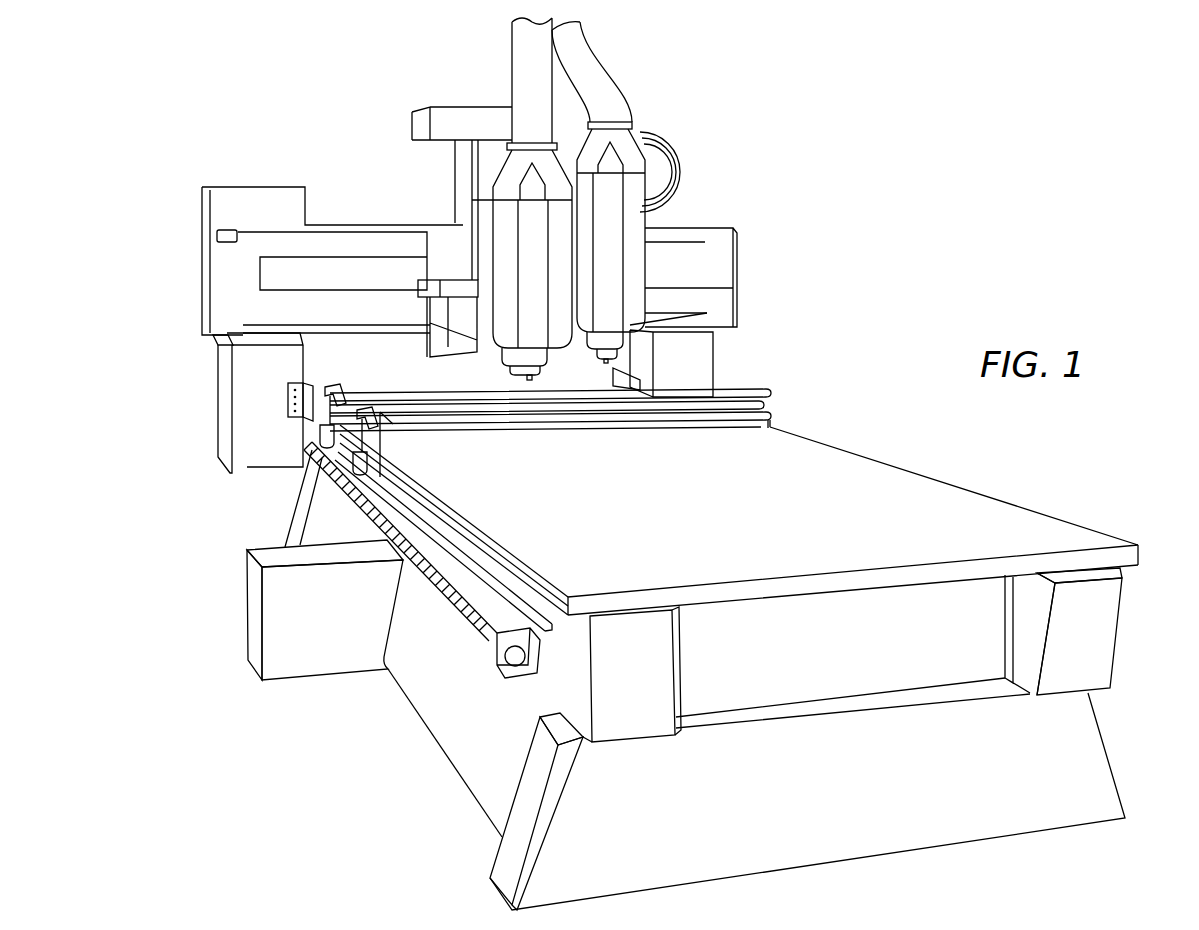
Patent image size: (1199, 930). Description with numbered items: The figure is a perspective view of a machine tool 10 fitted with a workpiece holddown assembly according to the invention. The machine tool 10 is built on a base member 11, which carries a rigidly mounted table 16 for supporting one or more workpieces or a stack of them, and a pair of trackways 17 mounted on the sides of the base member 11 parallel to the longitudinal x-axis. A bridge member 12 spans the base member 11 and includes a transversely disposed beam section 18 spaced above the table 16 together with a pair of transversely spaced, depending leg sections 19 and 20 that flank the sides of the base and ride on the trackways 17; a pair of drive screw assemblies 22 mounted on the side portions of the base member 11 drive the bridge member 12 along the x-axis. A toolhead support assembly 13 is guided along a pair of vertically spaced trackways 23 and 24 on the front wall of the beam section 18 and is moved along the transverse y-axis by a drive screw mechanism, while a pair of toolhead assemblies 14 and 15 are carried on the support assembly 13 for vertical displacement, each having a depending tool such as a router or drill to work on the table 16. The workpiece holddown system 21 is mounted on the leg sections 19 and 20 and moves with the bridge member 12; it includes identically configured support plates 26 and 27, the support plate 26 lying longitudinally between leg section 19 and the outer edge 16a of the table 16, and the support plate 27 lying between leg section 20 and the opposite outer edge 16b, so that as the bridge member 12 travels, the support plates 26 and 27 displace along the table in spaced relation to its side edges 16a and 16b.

The machine tool 10 is at (166, 362).
The base member 11 is at (246, 633).
The bridge member 12 is at (739, 293).
The toolhead support assembly 13 is at (413, 124).
The toolhead assembly 14 is at (494, 221).
The toolhead assembly 15 is at (645, 225).
The table 16 is at (962, 490).
The outer edge of table 16a is at (533, 576).
The outer edge of table 16b is at (1140, 547).
The trackway 17 is at (483, 570).
The beam section 18 is at (740, 240).
The leg section 19 is at (223, 392).
The leg section 20 is at (713, 368).
The workpiece holddown system 21 is at (757, 407).
The drive screw assembly 22 is at (362, 497).
The trackway 23 is at (238, 243).
The trackway 24 is at (243, 328).
The support plate 26 is at (312, 418).
The support plate 27 is at (772, 423).